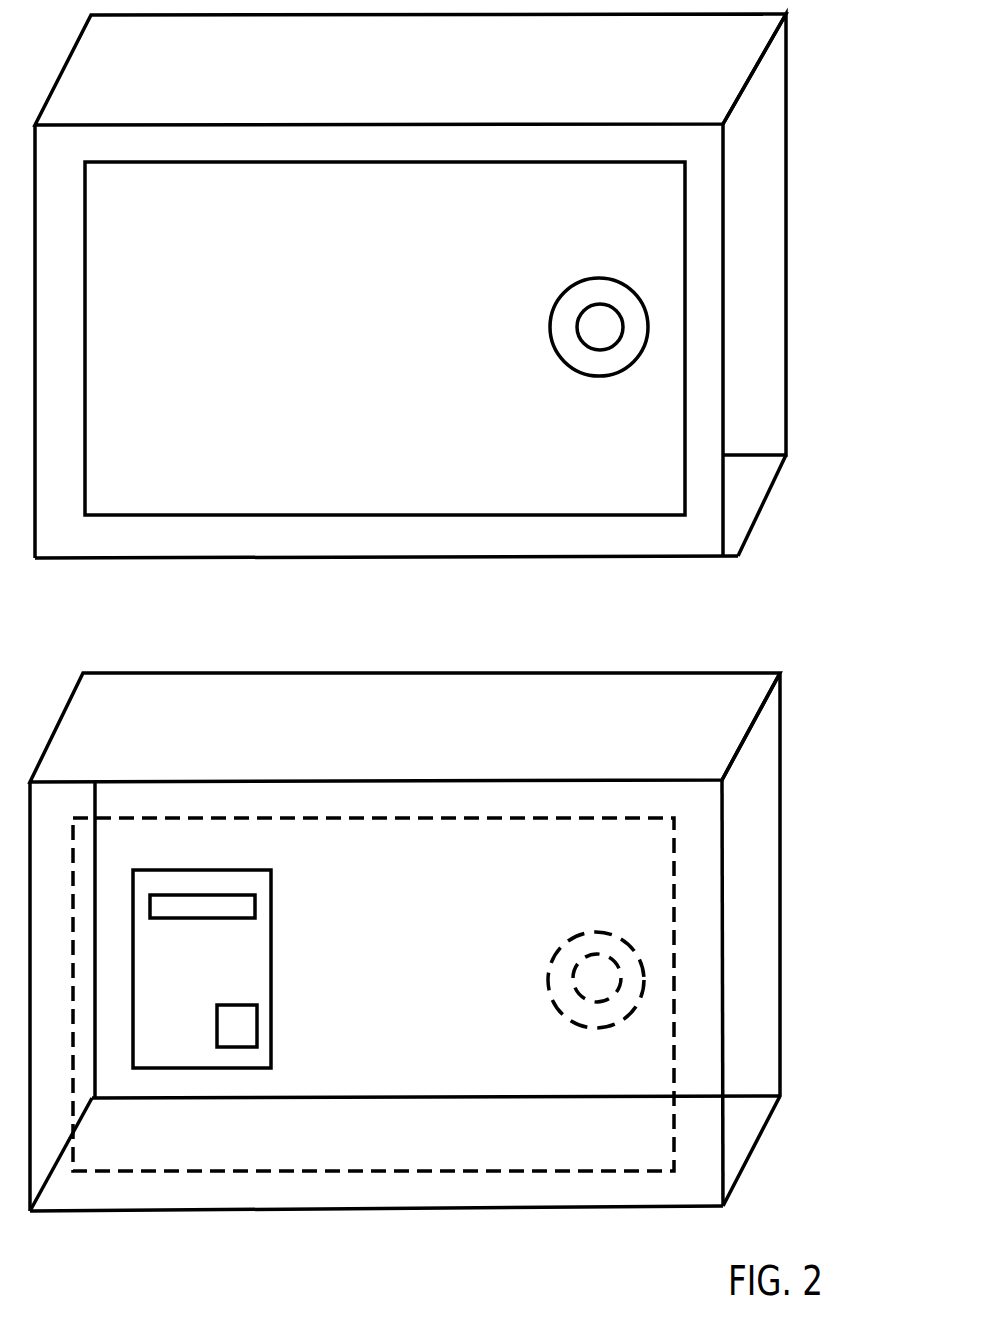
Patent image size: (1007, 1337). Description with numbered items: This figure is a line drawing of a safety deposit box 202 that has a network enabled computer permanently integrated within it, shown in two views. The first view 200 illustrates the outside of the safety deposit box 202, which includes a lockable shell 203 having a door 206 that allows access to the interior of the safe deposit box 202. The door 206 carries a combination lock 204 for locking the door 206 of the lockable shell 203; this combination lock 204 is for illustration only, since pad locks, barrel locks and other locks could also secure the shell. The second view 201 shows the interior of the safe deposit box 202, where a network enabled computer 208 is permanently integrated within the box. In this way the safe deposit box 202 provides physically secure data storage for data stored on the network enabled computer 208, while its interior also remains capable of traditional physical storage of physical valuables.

The first view 200 is at (786, 205).
The second view 201 is at (780, 885).
The safety deposit box 202 is at (382, 556).
The lockable shell 203 is at (294, 87).
The combination lock 204 is at (549, 327).
The door 206 is at (261, 316).
The network enabled computer 208 is at (271, 968).